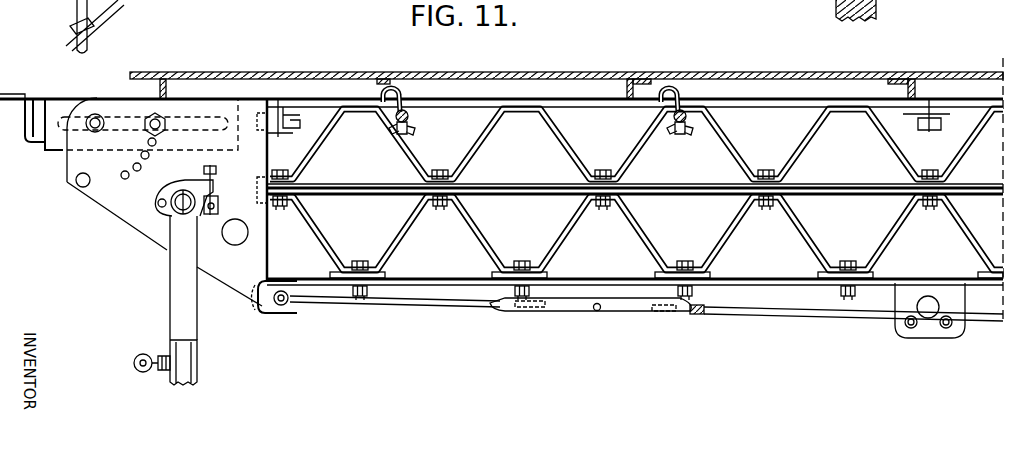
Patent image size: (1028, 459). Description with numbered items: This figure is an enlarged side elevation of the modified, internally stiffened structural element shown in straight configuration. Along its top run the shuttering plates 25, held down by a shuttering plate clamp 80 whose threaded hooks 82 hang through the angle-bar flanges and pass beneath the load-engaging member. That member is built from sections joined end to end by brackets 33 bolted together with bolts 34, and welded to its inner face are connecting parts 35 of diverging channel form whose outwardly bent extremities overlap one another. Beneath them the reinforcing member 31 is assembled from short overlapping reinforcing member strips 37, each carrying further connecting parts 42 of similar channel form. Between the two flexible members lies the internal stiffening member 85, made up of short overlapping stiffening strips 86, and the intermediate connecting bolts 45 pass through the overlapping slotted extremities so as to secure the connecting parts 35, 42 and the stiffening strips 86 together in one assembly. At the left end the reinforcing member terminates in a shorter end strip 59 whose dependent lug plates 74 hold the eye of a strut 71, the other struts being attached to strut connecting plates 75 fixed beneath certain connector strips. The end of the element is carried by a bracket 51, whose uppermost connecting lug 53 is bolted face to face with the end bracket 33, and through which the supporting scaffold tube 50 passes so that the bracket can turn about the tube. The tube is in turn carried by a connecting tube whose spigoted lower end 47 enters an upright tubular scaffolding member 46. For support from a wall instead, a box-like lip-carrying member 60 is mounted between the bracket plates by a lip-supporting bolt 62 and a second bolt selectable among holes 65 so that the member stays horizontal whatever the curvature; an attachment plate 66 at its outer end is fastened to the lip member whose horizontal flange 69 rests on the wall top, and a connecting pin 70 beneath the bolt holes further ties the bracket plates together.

The shuttering plates 25 is at (513, 78).
The reinforcing member 31 is at (607, 280).
The brackets 33 is at (291, 110).
The bolts 34 is at (913, 122).
The connecting parts 35 is at (490, 132).
The reinforcing member strips 37 is at (480, 273).
The further connecting parts 42 is at (407, 230).
The intermediate connecting bolts 45 is at (607, 170).
The upright tubular scaffolding members 46 is at (185, 365).
The spigoted lower end of connecting tube 47 is at (185, 318).
The supporting scaffold tube 50 is at (170, 244).
The bracket 51 is at (126, 208).
The uppermost connecting lug 53 is at (277, 98).
The end strip 59 is at (303, 277).
The lip-carrying member 60 is at (56, 148).
The lip-supporting bolt 62 is at (95, 114).
The holes 65 is at (122, 174).
The attachment plate 66 is at (40, 118).
The horizontal flange of lip member 69 is at (33, 132).
The connecting pin 70 is at (77, 185).
The struts 71 is at (483, 311).
The dependent lug plates 74 is at (287, 311).
The strut connecting plates 75 is at (910, 298).
The shuttering plate clamp 80 is at (418, 107).
The threaded hook 82 is at (410, 80).
The internal stiffening member 85 is at (530, 192).
The stiffening strips 86 is at (328, 187).